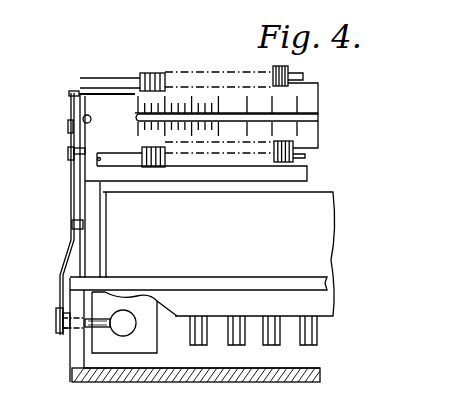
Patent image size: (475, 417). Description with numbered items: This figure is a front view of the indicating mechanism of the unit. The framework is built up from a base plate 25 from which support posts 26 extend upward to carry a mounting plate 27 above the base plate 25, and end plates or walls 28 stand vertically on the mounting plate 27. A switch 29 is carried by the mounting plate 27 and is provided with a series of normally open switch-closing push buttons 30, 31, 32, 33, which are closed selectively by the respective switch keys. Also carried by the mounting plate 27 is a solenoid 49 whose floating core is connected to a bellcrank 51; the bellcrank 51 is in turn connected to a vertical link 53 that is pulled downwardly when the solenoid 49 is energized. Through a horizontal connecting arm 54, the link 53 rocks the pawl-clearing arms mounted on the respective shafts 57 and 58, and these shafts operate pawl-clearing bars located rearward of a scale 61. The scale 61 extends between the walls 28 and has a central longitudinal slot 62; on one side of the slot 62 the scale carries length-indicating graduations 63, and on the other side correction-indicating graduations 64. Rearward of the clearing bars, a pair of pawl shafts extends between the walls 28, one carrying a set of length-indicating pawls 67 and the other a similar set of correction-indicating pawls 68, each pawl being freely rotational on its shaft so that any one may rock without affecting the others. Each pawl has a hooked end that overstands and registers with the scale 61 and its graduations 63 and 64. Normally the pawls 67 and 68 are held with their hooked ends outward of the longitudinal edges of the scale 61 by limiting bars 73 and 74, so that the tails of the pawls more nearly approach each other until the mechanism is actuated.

The base plate 25 is at (167, 378).
The support posts 26 is at (80, 351).
The mounting plate 27 is at (263, 273).
The end plates or walls 28 is at (88, 206).
The switch 29 is at (327, 226).
The switch-closing push button 30 is at (197, 346).
The switch-closing push button 31 is at (241, 347).
The switch-closing push button 32 is at (266, 341).
The switch-closing push button 33 is at (300, 345).
The solenoid 49 is at (143, 306).
The bellcrank 51 is at (56, 318).
The vertical link 53 is at (72, 243).
The horizontal connecting arm 54 is at (72, 155).
The shaft 57 is at (86, 151).
The shaft 58 is at (76, 92).
The scale 61 is at (318, 126).
The central longitudinal slot 62 is at (318, 113).
The length-indicating graduations 63 is at (177, 111).
The correction-indicating graduations 64 is at (186, 125).
The length-indicating pawls 67 is at (295, 72).
The correction-indicating pawls 68 is at (306, 158).
The limiting bar 73 is at (120, 78).
The limiting bar 74 is at (238, 165).